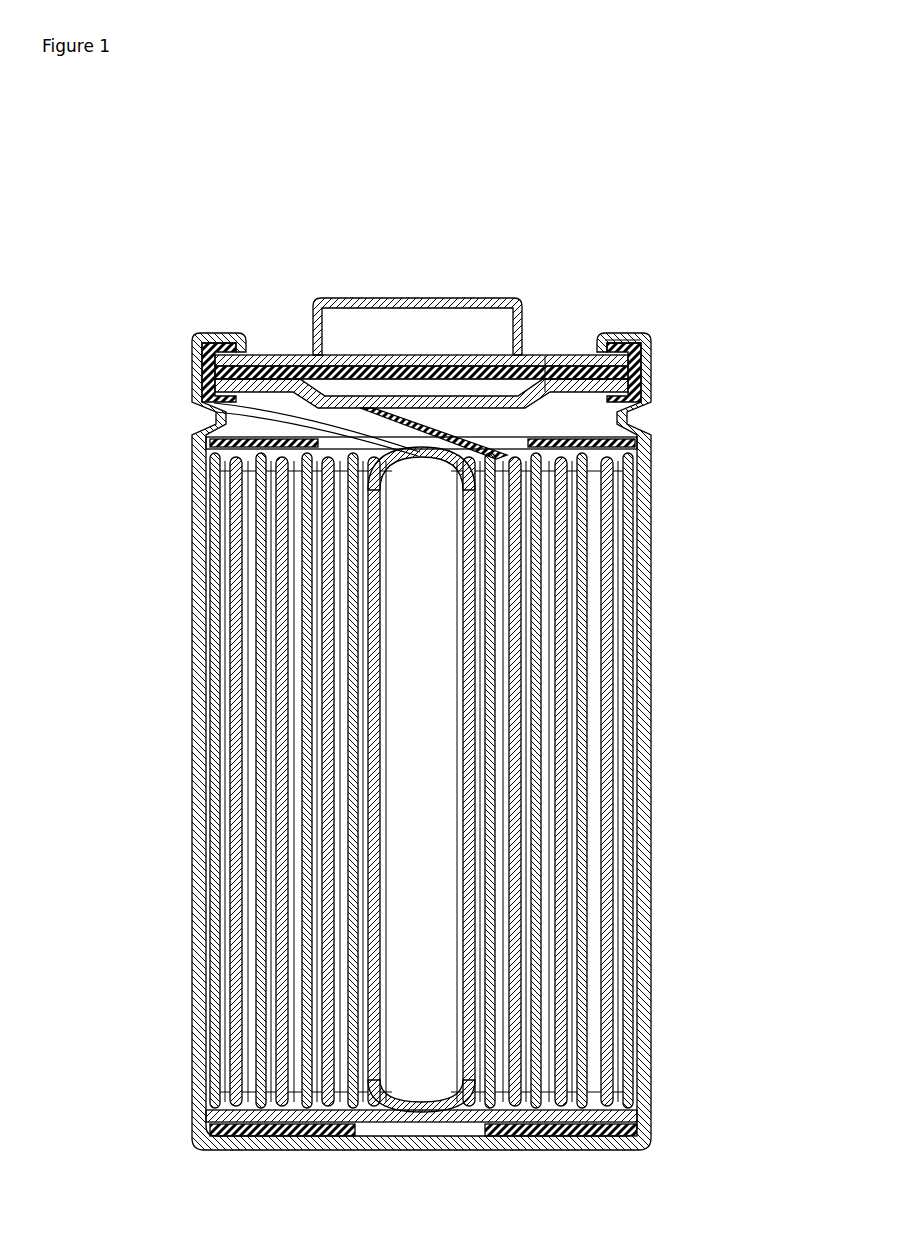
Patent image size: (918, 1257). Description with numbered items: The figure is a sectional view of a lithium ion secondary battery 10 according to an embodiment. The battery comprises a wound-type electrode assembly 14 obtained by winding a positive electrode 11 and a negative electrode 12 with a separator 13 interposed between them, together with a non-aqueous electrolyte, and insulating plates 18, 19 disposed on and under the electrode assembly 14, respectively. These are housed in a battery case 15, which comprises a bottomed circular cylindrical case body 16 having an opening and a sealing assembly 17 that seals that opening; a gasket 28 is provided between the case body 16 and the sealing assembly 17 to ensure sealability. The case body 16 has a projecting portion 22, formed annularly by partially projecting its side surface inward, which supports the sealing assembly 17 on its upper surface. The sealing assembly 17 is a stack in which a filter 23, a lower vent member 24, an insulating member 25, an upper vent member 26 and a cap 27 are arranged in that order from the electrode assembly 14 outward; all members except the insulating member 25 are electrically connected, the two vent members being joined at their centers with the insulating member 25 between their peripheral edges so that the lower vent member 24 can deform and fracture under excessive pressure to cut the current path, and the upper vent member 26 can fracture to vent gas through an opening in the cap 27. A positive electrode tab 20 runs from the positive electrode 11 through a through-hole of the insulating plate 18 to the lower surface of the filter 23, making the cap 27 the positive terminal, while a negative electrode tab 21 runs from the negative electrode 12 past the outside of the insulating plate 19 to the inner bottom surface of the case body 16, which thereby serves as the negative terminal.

The lithium ion secondary battery 10 is at (668, 177).
The positive electrode 11 is at (652, 850).
The negative electrode 12 is at (652, 879).
The separator 13 is at (652, 906).
The electrode assembly 14 is at (740, 838).
The battery case 15 is at (632, 246).
The case body 16 is at (620, 338).
The sealing assembly 17 is at (550, 355).
The insulating plate 18 is at (640, 441).
The insulating plate 19 is at (640, 1132).
The positive electrode tab 20 is at (205, 404).
The negative electrode tab 21 is at (210, 1128).
The projecting portion 22 is at (203, 433).
The filter 23 is at (420, 398).
The lower vent member 24 is at (330, 366).
The insulating member 25 is at (266, 355).
The upper vent member 26 is at (346, 372).
The cap 27 is at (480, 298).
The gasket 28 is at (652, 345).